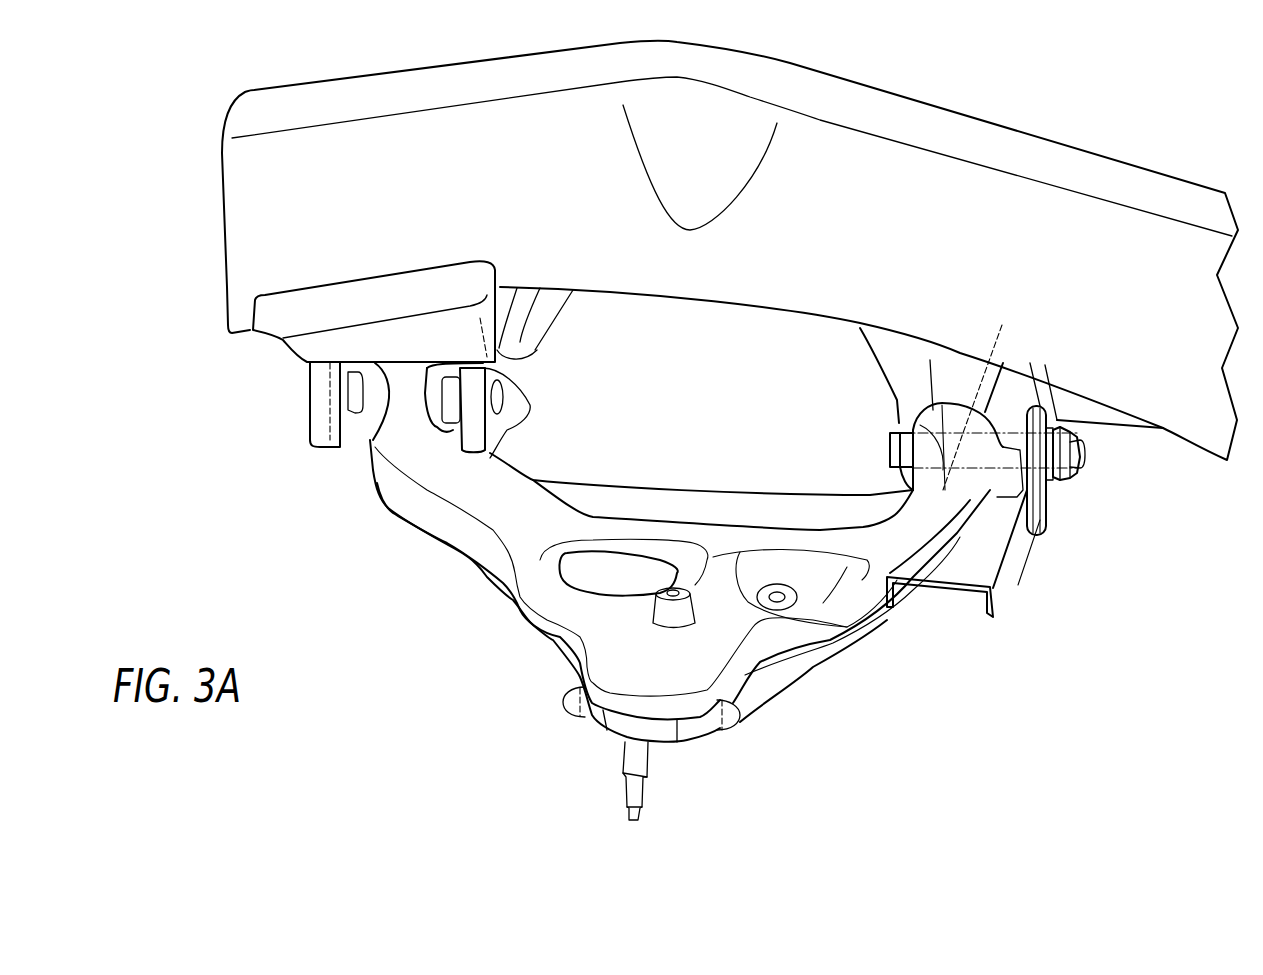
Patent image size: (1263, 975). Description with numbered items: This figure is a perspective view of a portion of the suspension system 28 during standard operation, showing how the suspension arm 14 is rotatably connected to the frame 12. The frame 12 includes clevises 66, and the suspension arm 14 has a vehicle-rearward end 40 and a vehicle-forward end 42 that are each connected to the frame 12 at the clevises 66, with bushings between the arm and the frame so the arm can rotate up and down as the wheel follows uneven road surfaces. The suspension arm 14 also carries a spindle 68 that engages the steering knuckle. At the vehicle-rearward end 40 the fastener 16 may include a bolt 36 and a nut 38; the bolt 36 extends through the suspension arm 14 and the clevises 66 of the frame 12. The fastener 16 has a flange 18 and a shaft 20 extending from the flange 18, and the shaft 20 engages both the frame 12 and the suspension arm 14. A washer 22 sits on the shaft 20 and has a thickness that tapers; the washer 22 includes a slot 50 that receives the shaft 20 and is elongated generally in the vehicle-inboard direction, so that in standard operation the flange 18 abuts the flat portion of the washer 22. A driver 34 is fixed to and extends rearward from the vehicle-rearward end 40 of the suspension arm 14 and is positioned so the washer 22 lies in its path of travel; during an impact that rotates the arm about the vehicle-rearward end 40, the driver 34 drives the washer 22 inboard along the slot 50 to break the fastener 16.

The frame 12 is at (1077, 163).
The suspension arm 14 is at (840, 640).
The fastener 16 is at (1057, 507).
The flange 18 is at (1055, 423).
The shaft 20 is at (979, 392).
The washer 22 is at (1053, 510).
The suspension system 28 is at (492, 676).
The driver 34 is at (1003, 577).
The bolt 36 is at (890, 440).
The nut 38 is at (1060, 490).
The vehicle-rearward end 40 is at (924, 372).
The vehicle-forward end 42 is at (405, 438).
The slot 50 is at (1036, 406).
The clevises 66 is at (305, 382).
The spindle 68 is at (622, 790).